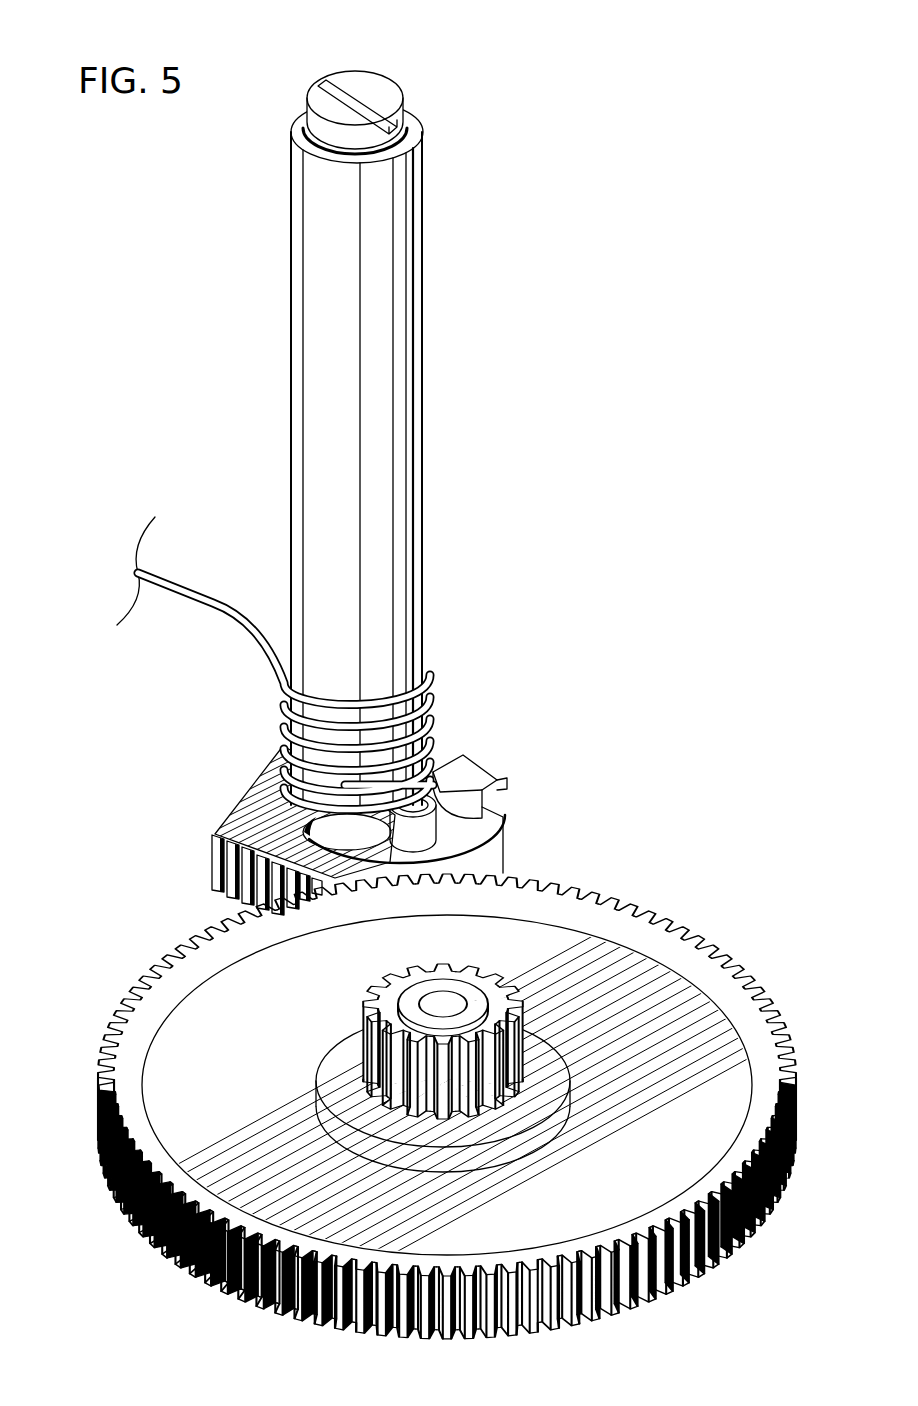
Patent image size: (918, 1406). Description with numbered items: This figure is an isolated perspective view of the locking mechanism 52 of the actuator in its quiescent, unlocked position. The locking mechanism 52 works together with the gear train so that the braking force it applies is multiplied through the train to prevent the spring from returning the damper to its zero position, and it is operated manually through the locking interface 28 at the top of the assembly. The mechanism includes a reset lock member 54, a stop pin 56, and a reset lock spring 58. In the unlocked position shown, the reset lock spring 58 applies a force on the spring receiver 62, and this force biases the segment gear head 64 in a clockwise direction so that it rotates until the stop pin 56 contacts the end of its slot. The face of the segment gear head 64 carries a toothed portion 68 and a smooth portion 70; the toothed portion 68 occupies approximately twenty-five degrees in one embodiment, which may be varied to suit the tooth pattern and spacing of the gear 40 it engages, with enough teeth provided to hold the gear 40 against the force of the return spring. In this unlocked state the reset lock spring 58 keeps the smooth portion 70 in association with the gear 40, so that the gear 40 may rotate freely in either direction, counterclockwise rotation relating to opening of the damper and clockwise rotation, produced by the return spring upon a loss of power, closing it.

The locking interface 28 is at (360, 81).
The gear 40 is at (697, 963).
The locking mechanism 52 is at (161, 348).
The reset lock member 54 is at (405, 352).
The stop pin 56 is at (425, 833).
The reset lock spring 58 is at (430, 690).
The spring receiver 62 is at (463, 776).
The segment gear head 64 is at (262, 790).
The toothed portion 68 is at (232, 873).
The smooth portion 70 is at (495, 843).